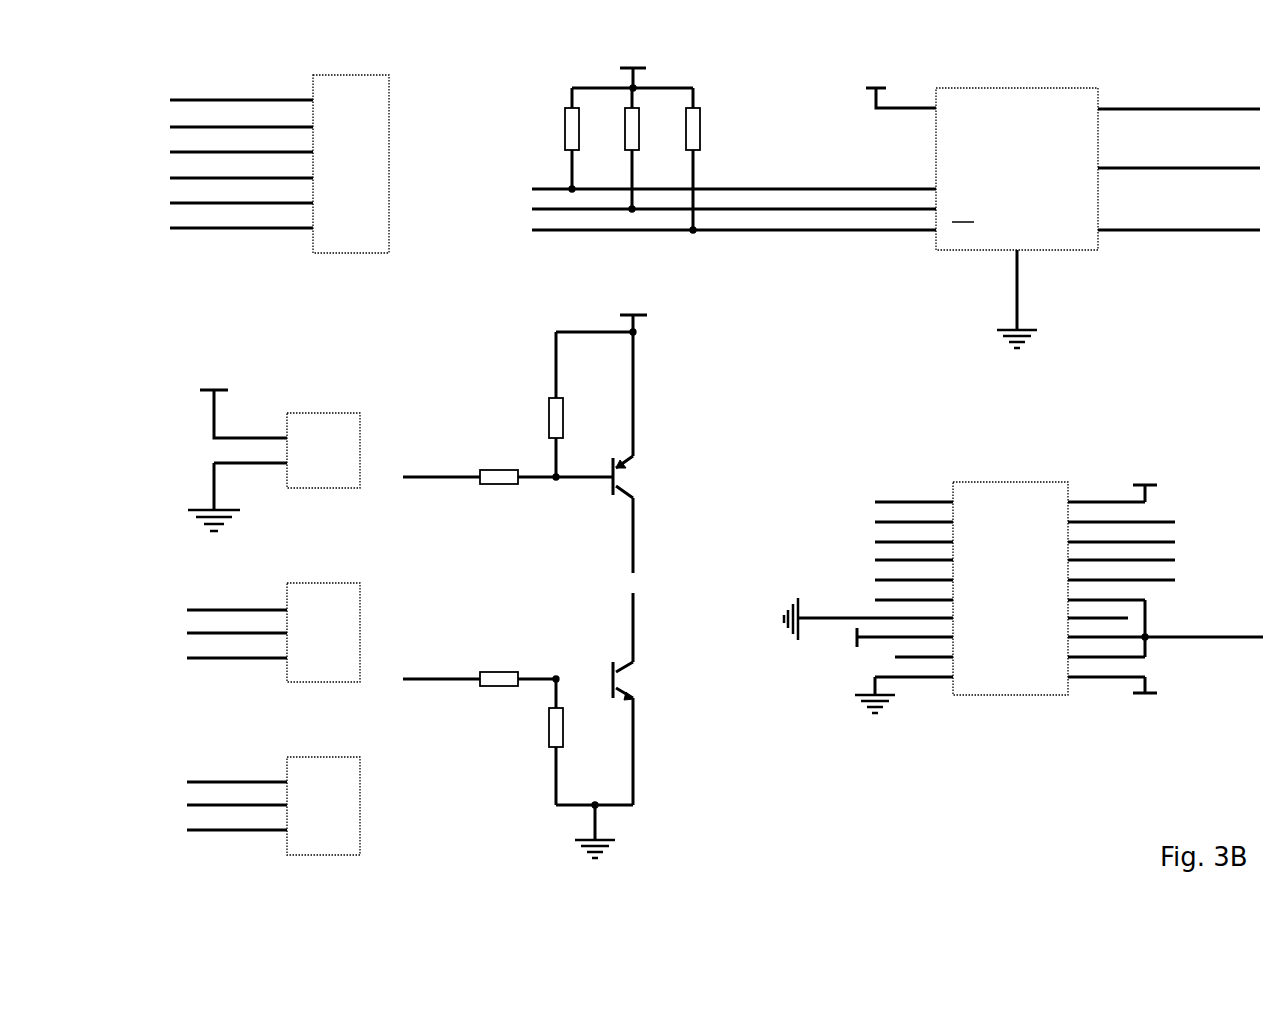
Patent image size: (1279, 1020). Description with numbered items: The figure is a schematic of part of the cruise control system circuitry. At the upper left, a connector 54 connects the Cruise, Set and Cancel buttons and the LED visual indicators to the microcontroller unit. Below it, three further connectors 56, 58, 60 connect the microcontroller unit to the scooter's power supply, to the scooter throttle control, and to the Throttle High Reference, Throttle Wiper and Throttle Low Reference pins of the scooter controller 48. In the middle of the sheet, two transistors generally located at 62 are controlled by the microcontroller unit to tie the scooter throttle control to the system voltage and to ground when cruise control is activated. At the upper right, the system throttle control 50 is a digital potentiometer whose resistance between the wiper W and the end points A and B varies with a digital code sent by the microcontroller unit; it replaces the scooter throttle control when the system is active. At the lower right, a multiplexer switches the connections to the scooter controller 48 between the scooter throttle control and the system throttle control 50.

The connector 54 is at (398, 98).
The connector 56 is at (377, 418).
The connector 58 is at (372, 592).
The connector 60 is at (372, 773).
The transistors 62 is at (695, 417).
The system throttle control 50 is at (1192, 288).
The scooter controller 48 is at (1195, 460).